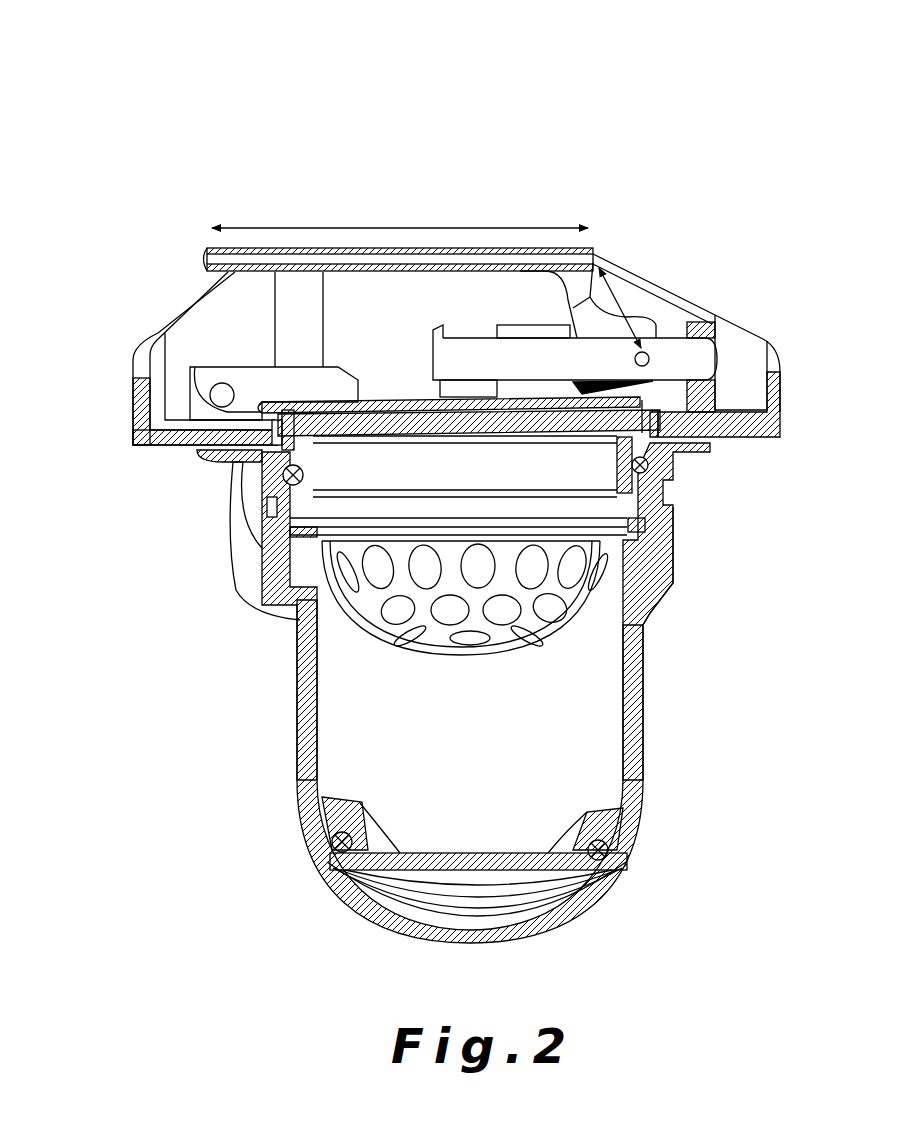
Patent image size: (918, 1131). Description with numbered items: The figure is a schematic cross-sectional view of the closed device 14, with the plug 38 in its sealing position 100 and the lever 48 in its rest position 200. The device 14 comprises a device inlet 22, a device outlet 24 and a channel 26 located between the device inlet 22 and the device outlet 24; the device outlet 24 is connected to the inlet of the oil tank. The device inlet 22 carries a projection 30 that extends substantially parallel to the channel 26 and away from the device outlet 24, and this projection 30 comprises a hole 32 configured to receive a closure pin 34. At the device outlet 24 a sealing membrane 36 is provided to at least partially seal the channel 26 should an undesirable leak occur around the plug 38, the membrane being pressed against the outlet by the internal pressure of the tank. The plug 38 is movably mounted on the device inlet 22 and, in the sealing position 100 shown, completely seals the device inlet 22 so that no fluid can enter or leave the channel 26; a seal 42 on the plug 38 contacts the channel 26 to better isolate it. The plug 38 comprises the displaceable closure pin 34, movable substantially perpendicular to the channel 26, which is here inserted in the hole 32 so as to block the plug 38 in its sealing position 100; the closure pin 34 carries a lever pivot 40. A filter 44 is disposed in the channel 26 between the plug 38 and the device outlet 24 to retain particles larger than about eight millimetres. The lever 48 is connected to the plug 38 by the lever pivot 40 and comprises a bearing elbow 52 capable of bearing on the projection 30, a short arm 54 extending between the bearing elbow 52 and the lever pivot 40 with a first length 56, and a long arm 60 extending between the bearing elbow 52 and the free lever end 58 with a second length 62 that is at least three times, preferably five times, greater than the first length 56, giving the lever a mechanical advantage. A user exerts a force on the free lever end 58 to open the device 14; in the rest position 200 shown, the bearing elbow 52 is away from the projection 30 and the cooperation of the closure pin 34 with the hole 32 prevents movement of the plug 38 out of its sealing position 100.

The rest position 200 is at (640, 143).
The device 14 is at (650, 918).
The device inlet 22 is at (397, 510).
The device outlet 24 is at (452, 847).
The channel 26 is at (408, 738).
The projection 30 is at (718, 392).
The hole 32 is at (712, 338).
The closure pin 34 is at (285, 450).
The sealing membrane 36 is at (547, 873).
The plug 38 is at (668, 540).
The lever pivot 40 is at (648, 355).
The seal 42 is at (672, 477).
The filter 44 is at (548, 582).
The lever 48 is at (363, 238).
The bearing elbow 52 is at (570, 277).
The short arm 54 is at (578, 298).
The first length 56 is at (596, 303).
The free lever end 58 is at (208, 250).
The long arm 60 is at (295, 268).
The second length 62 is at (447, 238).
The sealing position 100 is at (388, 368).